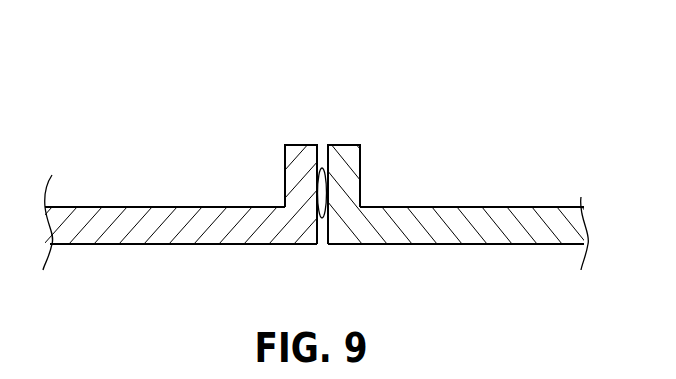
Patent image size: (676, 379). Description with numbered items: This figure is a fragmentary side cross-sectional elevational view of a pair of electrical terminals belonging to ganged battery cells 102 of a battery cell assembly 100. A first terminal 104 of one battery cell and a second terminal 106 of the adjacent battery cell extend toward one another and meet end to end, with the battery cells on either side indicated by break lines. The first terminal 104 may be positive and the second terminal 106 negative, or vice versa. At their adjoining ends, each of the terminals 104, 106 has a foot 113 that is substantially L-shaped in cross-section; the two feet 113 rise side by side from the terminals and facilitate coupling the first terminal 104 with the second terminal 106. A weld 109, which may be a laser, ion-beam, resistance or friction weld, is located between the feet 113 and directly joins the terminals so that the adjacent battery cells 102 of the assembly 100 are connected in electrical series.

The battery cell assembly 100 is at (453, 100).
The battery cell 102 is at (47, 200).
The first terminal 104 is at (516, 207).
The second terminal 106 is at (186, 207).
The weld 109 is at (321, 219).
The foot 113 is at (282, 148).